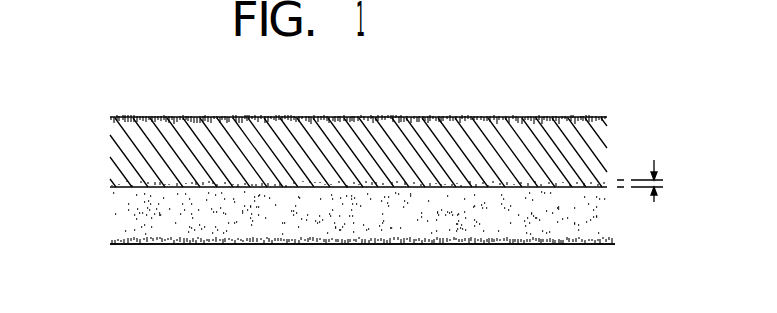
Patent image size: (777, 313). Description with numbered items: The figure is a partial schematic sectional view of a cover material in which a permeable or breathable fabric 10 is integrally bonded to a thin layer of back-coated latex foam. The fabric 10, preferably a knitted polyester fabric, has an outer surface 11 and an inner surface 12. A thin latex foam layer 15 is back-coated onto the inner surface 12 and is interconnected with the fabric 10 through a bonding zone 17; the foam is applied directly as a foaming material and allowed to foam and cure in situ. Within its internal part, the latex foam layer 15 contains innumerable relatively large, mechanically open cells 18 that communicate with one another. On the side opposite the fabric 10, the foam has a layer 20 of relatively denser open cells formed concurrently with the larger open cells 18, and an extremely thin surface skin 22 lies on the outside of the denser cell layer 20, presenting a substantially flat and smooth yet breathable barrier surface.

The fabric 10 is at (106, 187).
The outer surface 11 is at (531, 116).
The inner surface 12 is at (569, 185).
The latex foam layer 15 is at (106, 244).
The bonding zone 17 is at (667, 184).
The open cells 18 is at (598, 227).
The denser open cell layer 20 is at (614, 242).
The surface skin 22 is at (520, 248).